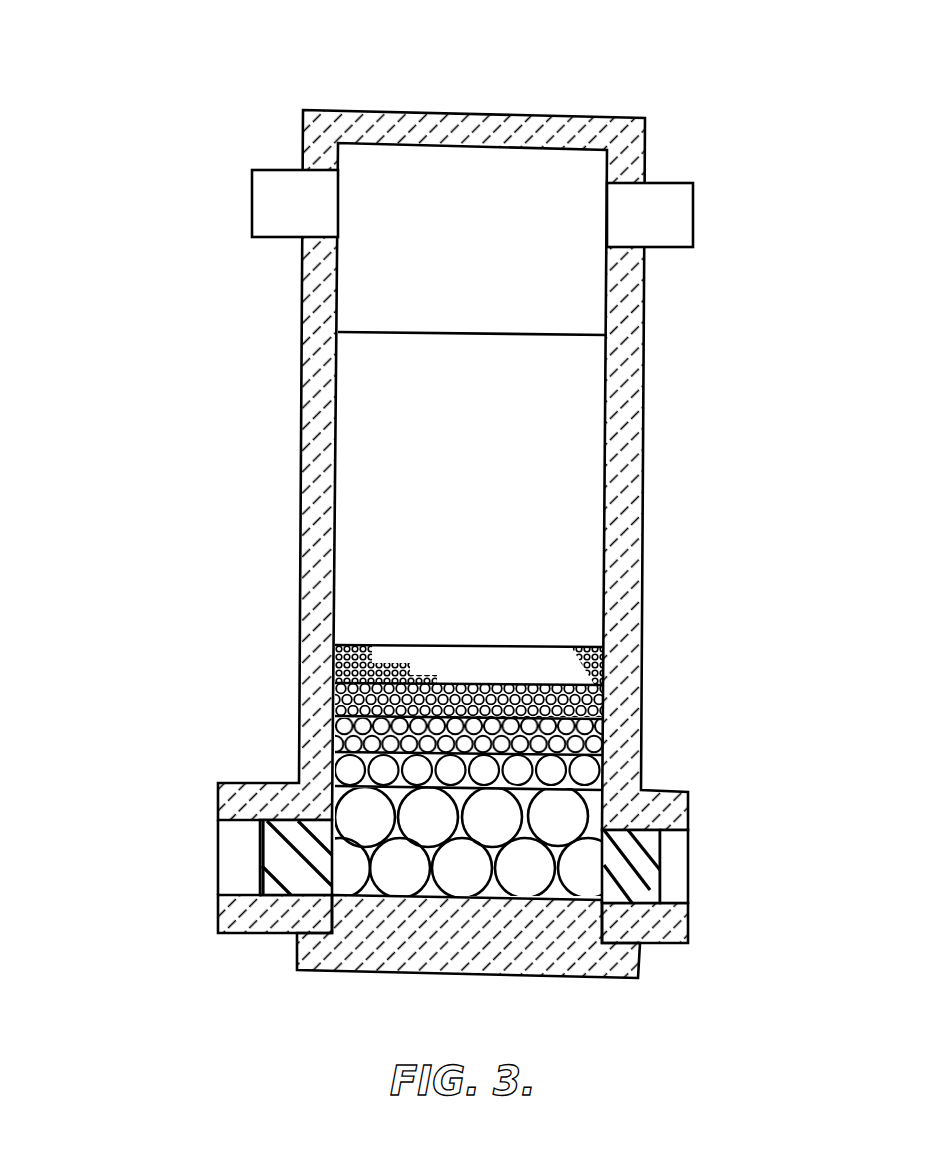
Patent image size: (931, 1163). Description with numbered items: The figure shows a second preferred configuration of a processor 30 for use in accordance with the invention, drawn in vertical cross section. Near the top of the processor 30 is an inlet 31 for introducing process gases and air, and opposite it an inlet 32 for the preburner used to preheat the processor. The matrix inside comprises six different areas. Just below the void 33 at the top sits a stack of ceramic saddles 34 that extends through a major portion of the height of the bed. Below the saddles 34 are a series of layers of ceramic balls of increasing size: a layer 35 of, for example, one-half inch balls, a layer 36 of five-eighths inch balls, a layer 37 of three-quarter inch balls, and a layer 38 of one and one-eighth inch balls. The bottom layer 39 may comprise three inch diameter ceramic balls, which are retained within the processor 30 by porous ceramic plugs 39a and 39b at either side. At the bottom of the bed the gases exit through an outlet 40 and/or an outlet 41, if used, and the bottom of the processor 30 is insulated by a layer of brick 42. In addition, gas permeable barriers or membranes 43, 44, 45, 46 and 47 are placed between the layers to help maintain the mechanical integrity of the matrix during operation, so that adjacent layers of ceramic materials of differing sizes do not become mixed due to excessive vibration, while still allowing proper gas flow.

The processor 30 is at (507, 63).
The inlet 31 is at (668, 183).
The preburner inlet 32 is at (278, 170).
The void 33 is at (486, 244).
The stack of ceramic saddles 34 is at (486, 414).
The layer of ceramic balls 35 is at (603, 670).
The layer of ceramic balls 36 is at (603, 694).
The layer of ceramic balls 37 is at (590, 738).
The layer of ceramic balls 38 is at (583, 772).
The bottom layer of ceramic balls 39 is at (577, 832).
The porous ceramic plug 39a is at (287, 880).
The porous ceramic plug 39b is at (632, 874).
The outlet 40 is at (257, 830).
The outlet 41 is at (674, 832).
The layer of brick 42 is at (489, 932).
The gas permeable barrier 43 is at (410, 645).
The gas permeable barrier 44 is at (333, 698).
The gas permeable barrier 45 is at (333, 723).
The gas permeable barrier 46 is at (333, 765).
The gas permeable barrier 47 is at (300, 797).